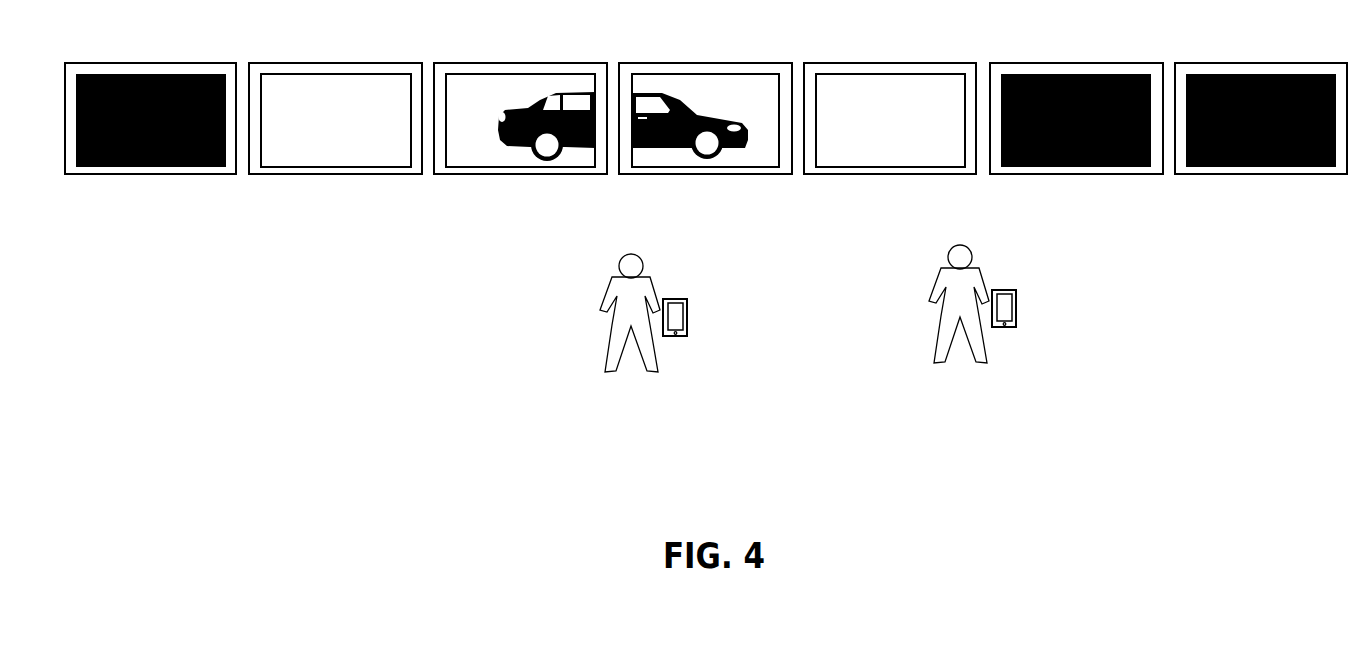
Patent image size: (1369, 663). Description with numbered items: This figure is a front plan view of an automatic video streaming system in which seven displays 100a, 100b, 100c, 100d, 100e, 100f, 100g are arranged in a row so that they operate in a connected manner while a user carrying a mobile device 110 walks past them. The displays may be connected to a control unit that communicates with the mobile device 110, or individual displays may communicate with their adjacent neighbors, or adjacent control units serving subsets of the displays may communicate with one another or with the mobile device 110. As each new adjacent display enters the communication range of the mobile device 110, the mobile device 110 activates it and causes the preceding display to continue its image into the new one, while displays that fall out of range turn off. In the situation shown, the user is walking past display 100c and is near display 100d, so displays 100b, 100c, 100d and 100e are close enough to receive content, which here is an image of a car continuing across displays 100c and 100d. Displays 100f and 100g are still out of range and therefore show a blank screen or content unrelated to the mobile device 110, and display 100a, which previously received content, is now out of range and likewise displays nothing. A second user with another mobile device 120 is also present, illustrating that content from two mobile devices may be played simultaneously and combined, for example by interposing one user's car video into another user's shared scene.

The display 100a is at (152, 63).
The display 100b is at (343, 63).
The display 100c is at (529, 63).
The display 100d is at (715, 63).
The display 100e is at (898, 63).
The display 100f is at (1084, 63).
The display 100g is at (1233, 63).
The mobile device 110 is at (675, 299).
The mobile device 120 is at (1000, 304).